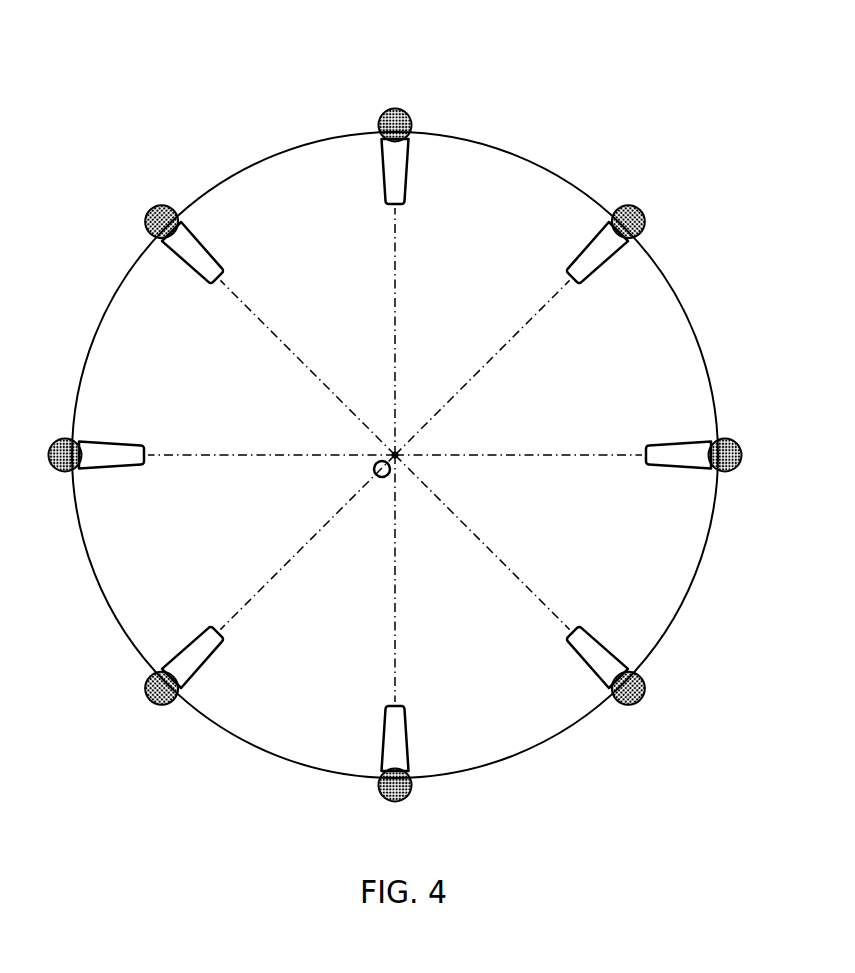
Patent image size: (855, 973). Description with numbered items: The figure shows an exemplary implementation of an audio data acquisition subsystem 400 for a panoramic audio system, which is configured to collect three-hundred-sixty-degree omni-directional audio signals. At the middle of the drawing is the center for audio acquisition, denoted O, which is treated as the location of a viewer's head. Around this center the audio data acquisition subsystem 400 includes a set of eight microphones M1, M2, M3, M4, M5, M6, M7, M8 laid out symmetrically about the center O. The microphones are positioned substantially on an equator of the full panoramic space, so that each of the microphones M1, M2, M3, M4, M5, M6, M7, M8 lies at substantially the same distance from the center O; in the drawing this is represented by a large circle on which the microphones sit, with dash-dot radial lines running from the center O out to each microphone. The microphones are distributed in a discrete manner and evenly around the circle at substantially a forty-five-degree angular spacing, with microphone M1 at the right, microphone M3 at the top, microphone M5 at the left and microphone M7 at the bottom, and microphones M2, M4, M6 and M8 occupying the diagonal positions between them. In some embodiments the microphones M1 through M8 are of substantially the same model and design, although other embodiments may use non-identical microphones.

The audio data acquisition subsystem 400 is at (417, 30).
The microphone M1 is at (708, 441).
The microphone M2 is at (631, 243).
The microphone M3 is at (420, 142).
The microphone M4 is at (183, 232).
The microphone M5 is at (78, 446).
The microphone M6 is at (166, 666).
The microphone M7 is at (398, 768).
The microphone M8 is at (626, 666).